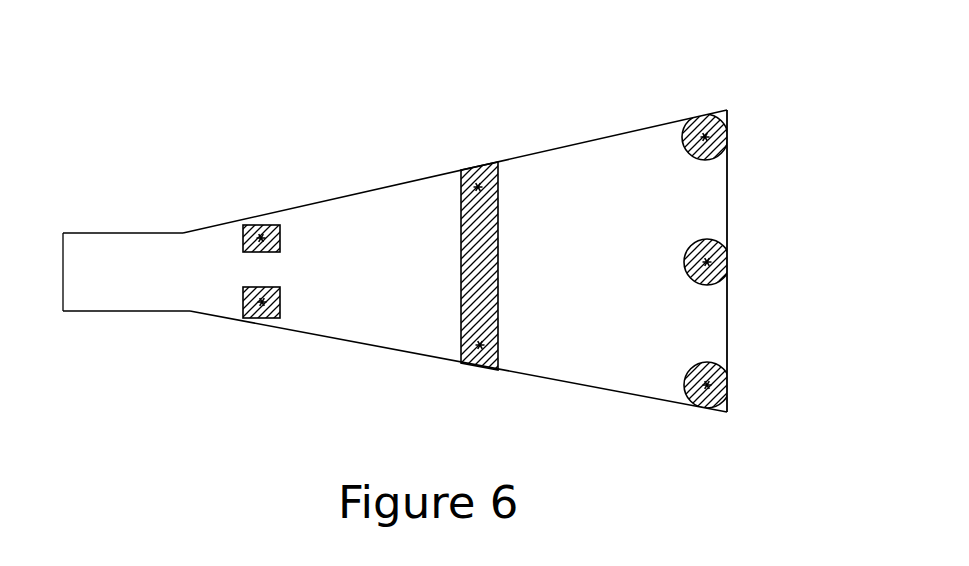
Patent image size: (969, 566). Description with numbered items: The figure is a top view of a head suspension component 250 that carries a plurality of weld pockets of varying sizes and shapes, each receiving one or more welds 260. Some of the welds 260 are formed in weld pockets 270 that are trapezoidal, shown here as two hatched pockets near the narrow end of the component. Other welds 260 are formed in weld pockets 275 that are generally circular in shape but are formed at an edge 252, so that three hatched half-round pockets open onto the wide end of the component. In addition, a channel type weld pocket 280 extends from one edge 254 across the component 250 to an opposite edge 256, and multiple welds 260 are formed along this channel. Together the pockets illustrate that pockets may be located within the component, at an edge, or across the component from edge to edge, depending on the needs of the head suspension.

The head suspension component 250 is at (655, 72).
The edge 252 is at (728, 181).
The edge 254 is at (352, 342).
The opposite edge 256 is at (570, 144).
The welds 260 is at (478, 186).
The weld pockets 270 is at (243, 312).
The weld pockets 275 is at (728, 383).
The channel type weld pocket 280 is at (498, 300).